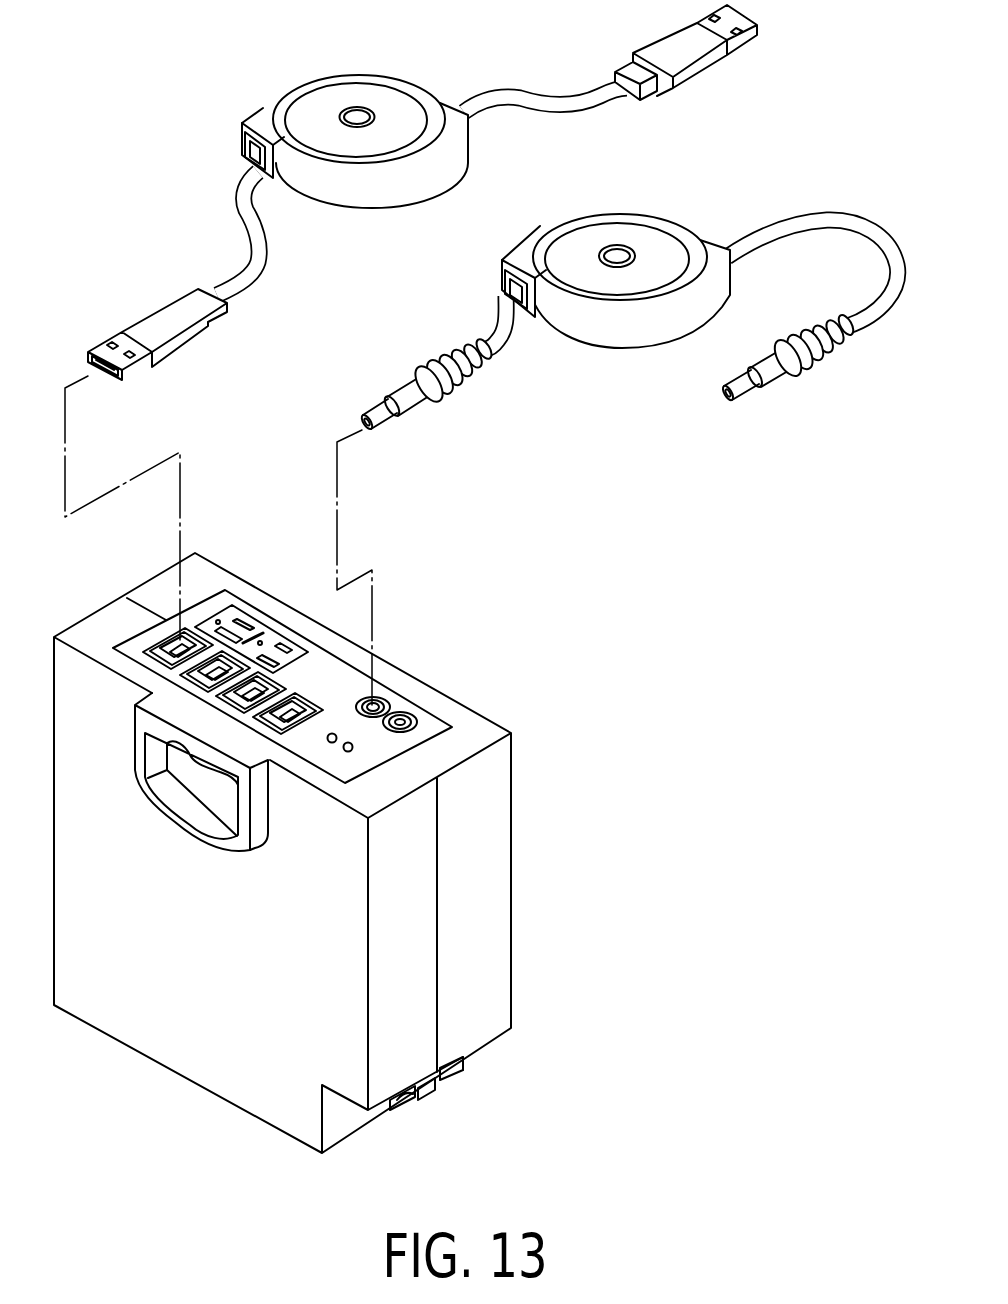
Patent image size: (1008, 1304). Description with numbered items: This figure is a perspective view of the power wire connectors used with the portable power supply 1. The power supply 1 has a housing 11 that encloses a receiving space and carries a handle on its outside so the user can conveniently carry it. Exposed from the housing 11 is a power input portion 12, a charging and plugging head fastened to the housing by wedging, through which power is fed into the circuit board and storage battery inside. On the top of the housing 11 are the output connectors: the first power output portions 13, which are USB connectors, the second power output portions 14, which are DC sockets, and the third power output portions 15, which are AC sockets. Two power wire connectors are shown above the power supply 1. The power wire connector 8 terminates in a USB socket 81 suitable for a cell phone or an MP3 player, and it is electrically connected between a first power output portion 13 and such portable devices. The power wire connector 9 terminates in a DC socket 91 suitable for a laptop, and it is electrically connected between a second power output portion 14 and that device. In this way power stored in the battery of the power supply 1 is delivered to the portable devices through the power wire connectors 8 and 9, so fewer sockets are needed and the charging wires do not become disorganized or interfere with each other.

The power supply 1 is at (513, 740).
The housing 11 is at (185, 1010).
The power input portion 12 is at (428, 1085).
The first power output portions 13 is at (200, 628).
The second power output portions 14 is at (377, 704).
The third power output portions 15 is at (280, 648).
The power wire connector 8 is at (255, 108).
The USB socket 81 is at (160, 317).
The power wire connector 9 is at (622, 347).
The DC socket 91 is at (440, 400).